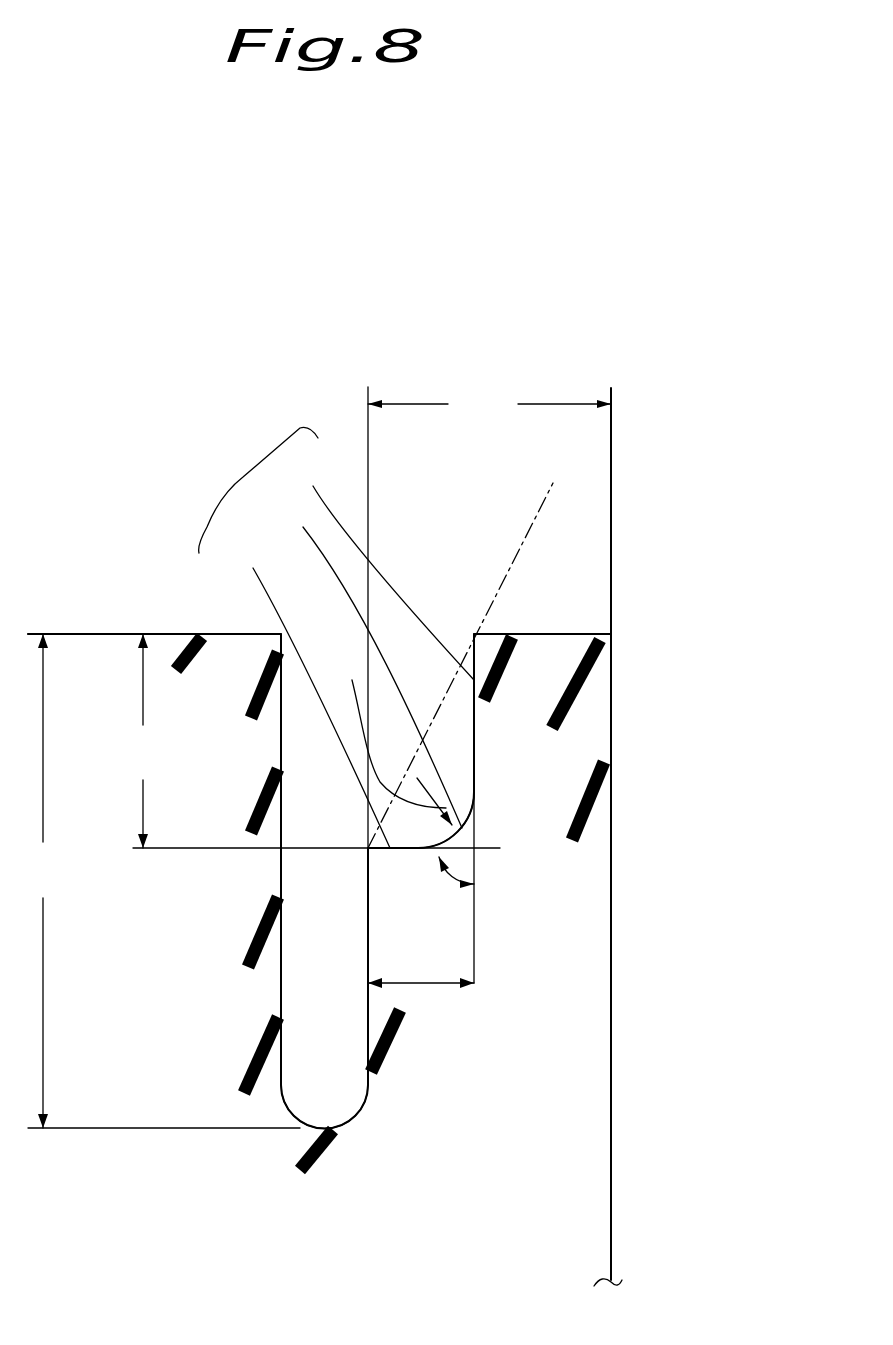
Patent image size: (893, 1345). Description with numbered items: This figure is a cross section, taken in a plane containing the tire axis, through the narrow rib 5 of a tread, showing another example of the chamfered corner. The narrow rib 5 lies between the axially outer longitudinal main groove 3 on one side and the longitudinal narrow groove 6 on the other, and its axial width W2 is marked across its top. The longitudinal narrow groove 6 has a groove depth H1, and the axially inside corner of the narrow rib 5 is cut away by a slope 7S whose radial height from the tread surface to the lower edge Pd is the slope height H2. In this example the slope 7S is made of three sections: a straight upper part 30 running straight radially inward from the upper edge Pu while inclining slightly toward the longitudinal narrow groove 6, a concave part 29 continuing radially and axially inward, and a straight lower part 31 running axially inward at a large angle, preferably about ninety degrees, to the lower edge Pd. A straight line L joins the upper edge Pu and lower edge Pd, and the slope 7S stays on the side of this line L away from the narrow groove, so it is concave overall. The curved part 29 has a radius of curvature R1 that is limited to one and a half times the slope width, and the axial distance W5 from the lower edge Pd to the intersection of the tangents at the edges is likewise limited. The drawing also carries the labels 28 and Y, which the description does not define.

The axially outer longitudinal main groove 3 is at (666, 859).
The narrow rib 5 is at (566, 632).
The longitudinal narrow groove 6 is at (332, 1022).
The slope 7S is at (235, 490).
The groove 28 is at (417, 590).
The concave part 29 is at (358, 657).
The straight upper part 30 is at (378, 558).
The straight lower part 31 is at (301, 684).
The straight line L is at (460, 657).
The upper edge Pu is at (487, 623).
The lower edge Pd is at (352, 862).
The radius of curvature R1 is at (385, 728).
The region Y is at (525, 772).
The axial width of narrow rib W2 is at (489, 404).
The axial distance W5 is at (442, 983).
The groove depth H1 is at (164, 881).
The slope height H2 is at (315, 741).